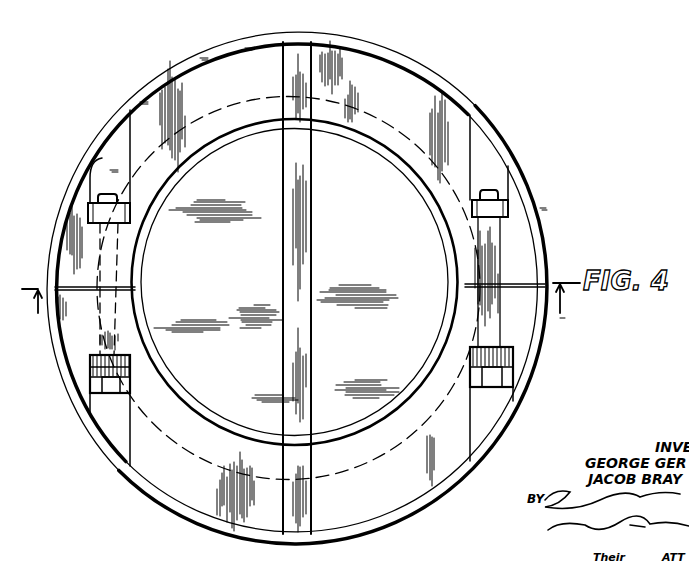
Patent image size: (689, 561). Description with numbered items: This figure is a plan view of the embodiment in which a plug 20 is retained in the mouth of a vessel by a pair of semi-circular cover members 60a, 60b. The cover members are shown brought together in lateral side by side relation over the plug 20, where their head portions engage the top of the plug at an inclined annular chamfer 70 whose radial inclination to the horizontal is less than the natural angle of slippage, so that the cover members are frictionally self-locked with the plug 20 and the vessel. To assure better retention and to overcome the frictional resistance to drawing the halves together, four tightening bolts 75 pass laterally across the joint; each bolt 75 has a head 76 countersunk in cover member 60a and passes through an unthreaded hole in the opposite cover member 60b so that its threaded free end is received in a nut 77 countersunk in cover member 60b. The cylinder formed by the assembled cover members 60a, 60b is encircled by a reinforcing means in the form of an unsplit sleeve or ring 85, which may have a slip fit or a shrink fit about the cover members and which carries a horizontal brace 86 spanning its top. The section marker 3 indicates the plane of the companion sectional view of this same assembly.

The reinforcing ring 85 is at (238, 27).
The cover member 60b is at (393, 67).
The cover member 60a is at (398, 504).
The horizontal brace 86 is at (312, 218).
The inclined annular chamfer 70 is at (141, 243).
The plug 20 is at (358, 272).
The nut 77 is at (92, 166).
The tightening bolt 75 is at (98, 333).
The bolt head 76 is at (103, 395).
The section line 3 is at (301, 310).